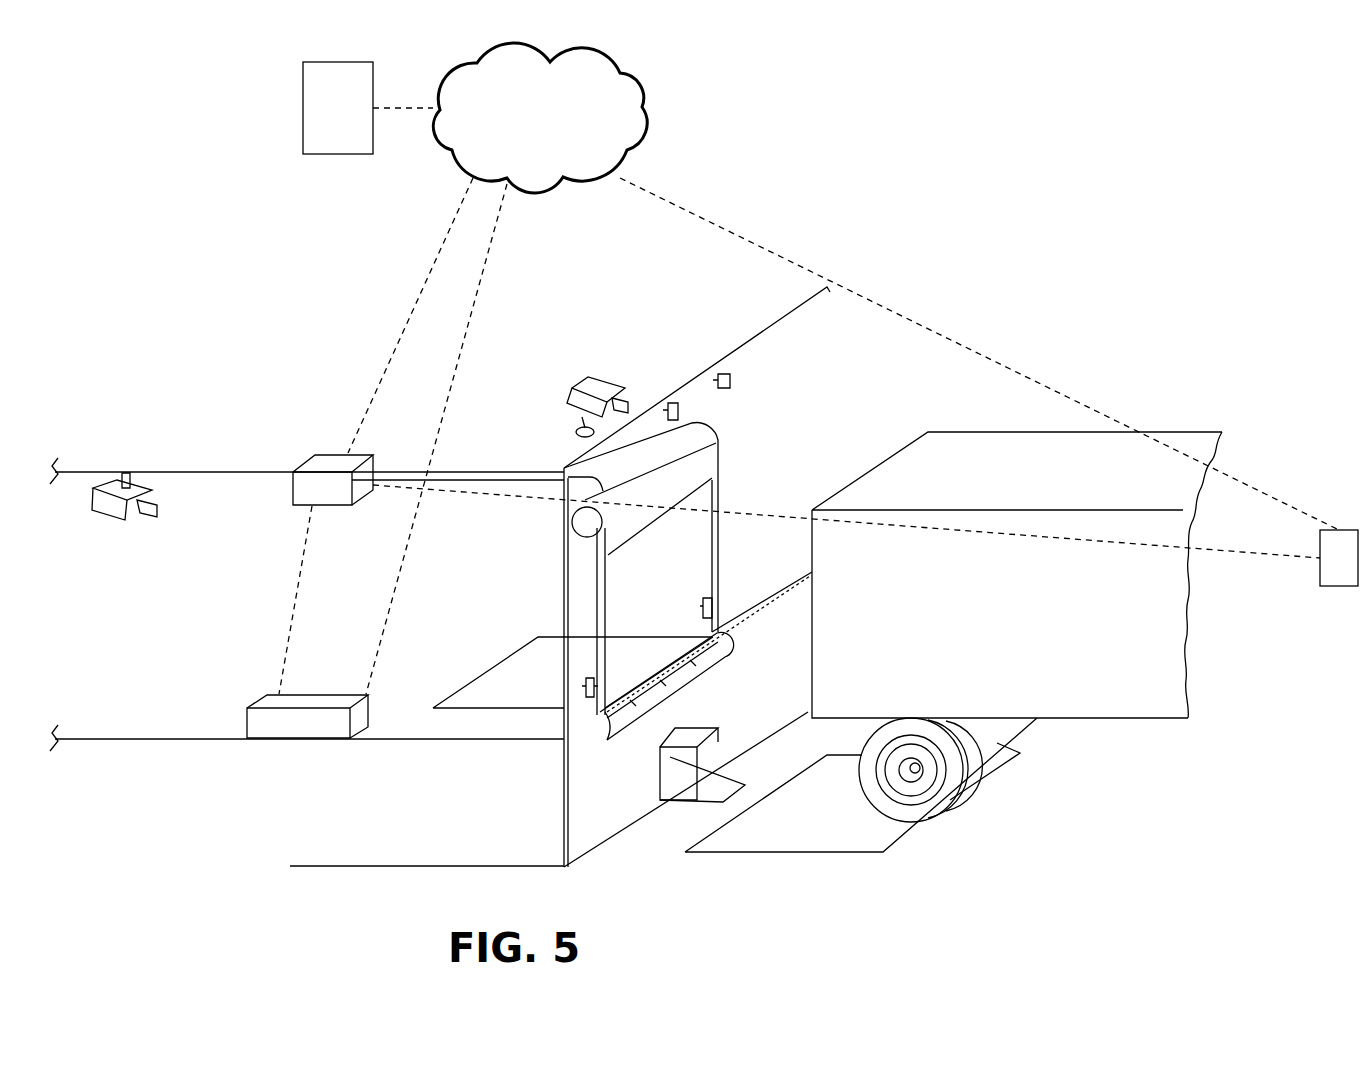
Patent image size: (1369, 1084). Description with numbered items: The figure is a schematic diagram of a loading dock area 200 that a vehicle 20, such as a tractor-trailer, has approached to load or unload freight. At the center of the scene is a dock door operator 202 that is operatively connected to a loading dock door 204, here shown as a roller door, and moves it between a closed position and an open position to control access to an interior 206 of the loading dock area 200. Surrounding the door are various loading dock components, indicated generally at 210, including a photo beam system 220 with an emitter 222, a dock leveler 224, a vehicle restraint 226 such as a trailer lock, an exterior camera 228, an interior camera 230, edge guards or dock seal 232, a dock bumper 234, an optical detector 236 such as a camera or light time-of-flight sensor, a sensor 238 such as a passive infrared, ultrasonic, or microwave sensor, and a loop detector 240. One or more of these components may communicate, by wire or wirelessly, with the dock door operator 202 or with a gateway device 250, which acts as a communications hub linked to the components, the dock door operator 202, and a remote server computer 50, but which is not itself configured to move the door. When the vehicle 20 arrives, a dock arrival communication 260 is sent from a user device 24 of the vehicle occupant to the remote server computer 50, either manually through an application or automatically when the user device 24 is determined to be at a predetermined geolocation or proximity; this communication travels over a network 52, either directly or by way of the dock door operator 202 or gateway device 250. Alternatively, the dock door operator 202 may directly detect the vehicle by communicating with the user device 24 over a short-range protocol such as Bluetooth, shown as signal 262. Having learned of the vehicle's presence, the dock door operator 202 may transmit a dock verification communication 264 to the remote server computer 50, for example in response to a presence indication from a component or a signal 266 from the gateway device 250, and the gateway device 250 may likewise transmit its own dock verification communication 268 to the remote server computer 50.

The vehicle 20 is at (1077, 718).
The user device 24 is at (1340, 586).
The remote server computer 50 is at (340, 155).
The network 52 is at (652, 121).
The loading dock area 200 is at (211, 345).
The dock door operator 202 is at (317, 507).
The loading dock door 204 is at (651, 520).
The interior 206 is at (428, 682).
The loading dock components 210 is at (160, 699).
The photo beam system 220 is at (588, 700).
The emitter 222 is at (717, 633).
The dock leveler 224 is at (500, 695).
The vehicle restraint 226 is at (745, 770).
The exterior camera 228 is at (580, 378).
The interior camera 230 is at (107, 510).
The edge guards or dock seal 232 is at (568, 602).
The dock bumper 234 is at (712, 660).
The optical detector 236 is at (670, 400).
The sensor 238 is at (738, 362).
The loop detector 240 is at (748, 855).
The gateway device 250 is at (322, 696).
The dock arrival communication 260 is at (928, 322).
The signal 262 is at (1250, 554).
The dock verification communication 264 is at (392, 346).
The signal 266 is at (296, 582).
The dock verification communication 268 is at (482, 282).